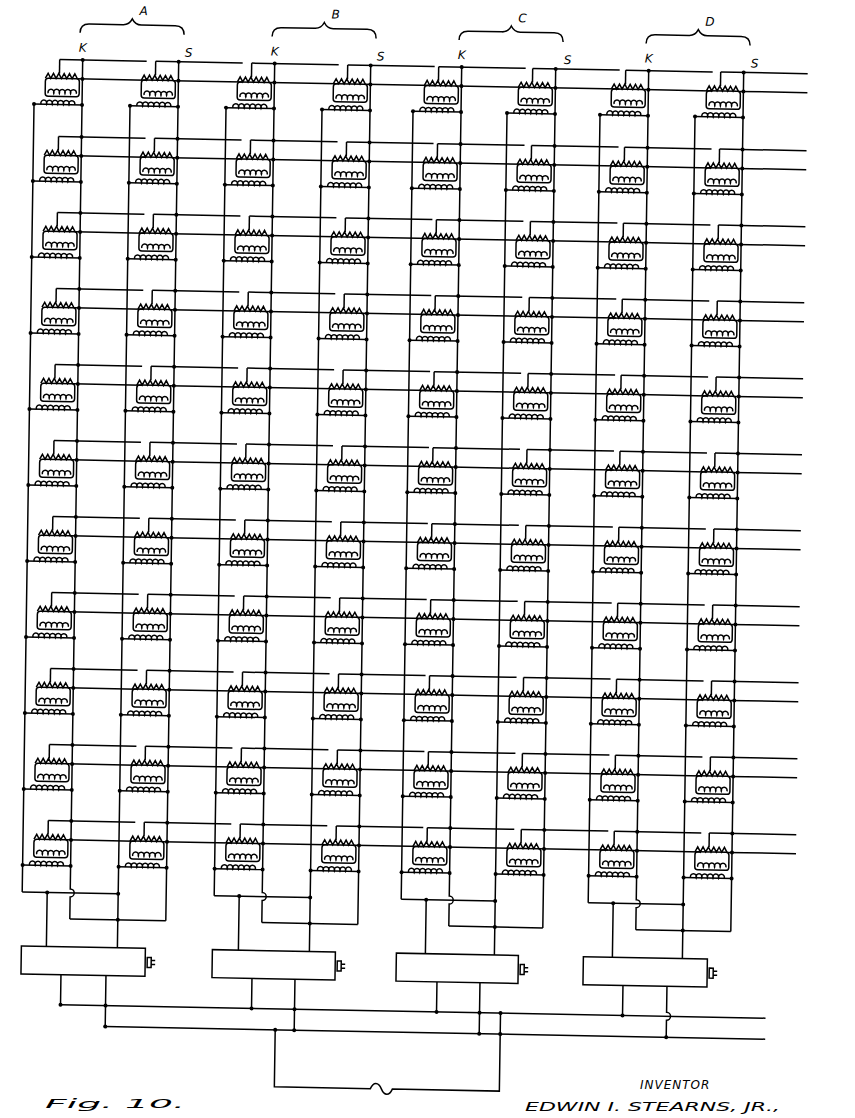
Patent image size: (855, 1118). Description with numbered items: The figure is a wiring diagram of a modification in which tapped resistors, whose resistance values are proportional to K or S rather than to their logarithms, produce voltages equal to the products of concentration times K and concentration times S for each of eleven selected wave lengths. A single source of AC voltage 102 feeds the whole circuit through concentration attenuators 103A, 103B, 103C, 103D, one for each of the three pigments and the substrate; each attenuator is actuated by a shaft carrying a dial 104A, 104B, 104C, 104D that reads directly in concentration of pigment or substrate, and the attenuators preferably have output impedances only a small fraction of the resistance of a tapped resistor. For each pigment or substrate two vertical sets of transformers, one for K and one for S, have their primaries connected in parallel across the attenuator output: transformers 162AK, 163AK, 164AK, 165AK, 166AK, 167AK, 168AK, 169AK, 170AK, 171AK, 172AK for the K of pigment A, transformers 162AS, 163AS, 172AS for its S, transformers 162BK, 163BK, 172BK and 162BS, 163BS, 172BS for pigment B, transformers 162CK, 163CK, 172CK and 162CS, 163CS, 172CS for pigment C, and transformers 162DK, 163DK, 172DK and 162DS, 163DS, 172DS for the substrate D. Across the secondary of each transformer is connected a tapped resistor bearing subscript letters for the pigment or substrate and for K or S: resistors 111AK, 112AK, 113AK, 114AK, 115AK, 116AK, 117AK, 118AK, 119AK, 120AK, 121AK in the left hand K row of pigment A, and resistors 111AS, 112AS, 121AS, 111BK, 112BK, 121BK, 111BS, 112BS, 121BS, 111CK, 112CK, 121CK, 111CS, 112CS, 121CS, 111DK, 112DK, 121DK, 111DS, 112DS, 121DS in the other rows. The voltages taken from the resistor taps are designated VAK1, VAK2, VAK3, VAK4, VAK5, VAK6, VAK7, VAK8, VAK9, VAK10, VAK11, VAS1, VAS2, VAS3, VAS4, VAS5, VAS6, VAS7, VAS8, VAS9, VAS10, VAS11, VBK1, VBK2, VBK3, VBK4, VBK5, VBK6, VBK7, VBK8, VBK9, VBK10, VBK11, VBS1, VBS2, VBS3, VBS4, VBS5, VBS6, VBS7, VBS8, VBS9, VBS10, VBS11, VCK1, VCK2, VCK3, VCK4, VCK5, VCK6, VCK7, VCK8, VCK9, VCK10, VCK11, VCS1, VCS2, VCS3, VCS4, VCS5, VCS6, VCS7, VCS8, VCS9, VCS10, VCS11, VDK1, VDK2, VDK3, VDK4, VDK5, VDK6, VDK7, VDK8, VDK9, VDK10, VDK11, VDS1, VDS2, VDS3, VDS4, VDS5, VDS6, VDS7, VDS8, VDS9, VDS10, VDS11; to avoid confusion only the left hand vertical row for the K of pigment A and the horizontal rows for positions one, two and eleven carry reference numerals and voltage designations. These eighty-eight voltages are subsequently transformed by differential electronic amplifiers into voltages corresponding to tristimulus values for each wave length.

The tapped resistor 111AK is at (12, 46).
The tapped resistor 112AK is at (60, 148).
The tapped resistor 113AK is at (59, 224).
The tapped resistor 114AK is at (58, 300).
The tapped resistor 115AK is at (57, 376).
The tapped resistor 116AK is at (55, 452).
The tapped resistor 117AK is at (54, 528).
The tapped resistor 118AK is at (53, 604).
The tapped resistor 119AK is at (52, 680).
The tapped resistor 120AK is at (51, 756).
The tapped resistor 121AK is at (50, 832).
The tapped resistor 111AS is at (143, 67).
The tapped resistor 112AS is at (156, 150).
The tapped resistor 121AS is at (146, 834).
The tapped resistor 111BK is at (247, 70).
The tapped resistor 112BK is at (252, 152).
The tapped resistor 121BK is at (242, 836).
The tapped resistor 111BS is at (342, 71).
The tapped resistor 112BS is at (348, 154).
The tapped resistor 121BS is at (338, 838).
The tapped resistor 111CK is at (435, 73).
The tapped resistor 112CK is at (439, 155).
The tapped resistor 121CK is at (429, 839).
The tapped resistor 111CS is at (527, 75).
The tapped resistor 112CS is at (533, 157).
The tapped resistor 121CS is at (523, 841).
The tapped resistor 111DK is at (622, 77).
The tapped resistor 112DK is at (627, 159).
The tapped resistor 121DK is at (617, 843).
The tapped resistor 111DS is at (714, 78).
The tapped resistor 112DS is at (721, 161).
The tapped resistor 121DS is at (711, 845).
The transformer 162AK is at (41, 73).
The transformer 163AK is at (78, 189).
The transformer 164AK is at (76, 265).
The transformer 165AK is at (75, 341).
The transformer 166AK is at (74, 417).
The transformer 167AK is at (73, 493).
The transformer 168AK is at (72, 569).
The transformer 169AK is at (71, 645).
The transformer 170AK is at (70, 721).
The transformer 171AK is at (68, 797).
The transformer 172AK is at (67, 873).
The transformer 162AS is at (173, 102).
The transformer 163AS is at (173, 191).
The transformer 172AS is at (162, 875).
The transformer 162BK is at (270, 104).
The transformer 163BK is at (270, 193).
The transformer 172BK is at (259, 877).
The transformer 162BS is at (365, 105).
The transformer 163BS is at (365, 194).
The transformer 172BS is at (354, 878).
The transformer 162CK is at (457, 107).
The transformer 163CK is at (457, 196).
The transformer 172CK is at (446, 880).
The transformer 162CS is at (551, 109).
The transformer 163CS is at (551, 198).
The transformer 172CS is at (540, 882).
The transformer 162DK is at (644, 111).
The transformer 163DK is at (644, 200).
The transformer 172DK is at (633, 884).
The transformer 162DS is at (739, 113).
The transformer 163DS is at (739, 201).
The transformer 172DS is at (728, 885).
The voltage VAK1 is at (102, 69).
The voltage VAK2 is at (101, 146).
The voltage VAK3 is at (100, 222).
The voltage VAK4 is at (99, 298).
The voltage VAK5 is at (98, 374).
The voltage VAK6 is at (97, 450).
The voltage VAK7 is at (96, 526).
The voltage VAK8 is at (94, 602).
The voltage VAK9 is at (93, 678).
The voltage VAK10 is at (92, 754).
The voltage VAK11 is at (91, 830).
The voltage VAS1 is at (198, 71).
The voltage VAS2 is at (197, 148).
The voltage VAS3 is at (196, 224).
The voltage VAS4 is at (195, 300).
The voltage VAS5 is at (194, 376).
The voltage VAS6 is at (193, 452).
The voltage VAS7 is at (192, 528).
The voltage VAS8 is at (190, 604).
The voltage VAS9 is at (189, 680).
The voltage VAS10 is at (188, 756).
The voltage VAS11 is at (187, 832).
The voltage VBK1 is at (294, 73).
The voltage VBK2 is at (293, 150).
The voltage VBK3 is at (292, 226).
The voltage VBK4 is at (291, 302).
The voltage VBK5 is at (290, 378).
The voltage VBK6 is at (289, 454).
The voltage VBK7 is at (288, 530).
The voltage VBK8 is at (286, 606).
The voltage VBK9 is at (285, 682).
The voltage VBK10 is at (284, 758).
The voltage VBK11 is at (283, 834).
The voltage VBS1 is at (390, 75).
The voltage VBS2 is at (389, 152).
The voltage VBS3 is at (388, 228).
The voltage VBS4 is at (387, 304).
The voltage VBS5 is at (386, 380).
The voltage VBS6 is at (385, 456).
The voltage VBS7 is at (384, 532).
The voltage VBS8 is at (382, 608).
The voltage VBS9 is at (381, 684).
The voltage VBS10 is at (380, 760).
The voltage VBS11 is at (379, 836).
The voltage VCK1 is at (481, 77).
The voltage VCK2 is at (480, 154).
The voltage VCK3 is at (479, 230).
The voltage VCK4 is at (478, 306).
The voltage VCK5 is at (477, 382).
The voltage VCK6 is at (476, 458).
The voltage VCK7 is at (475, 534).
The voltage VCK8 is at (473, 610).
The voltage VCK9 is at (472, 686).
The voltage VCK10 is at (471, 762).
The voltage VCK11 is at (470, 838).
The voltage VCS1 is at (575, 78).
The voltage VCS2 is at (574, 155).
The voltage VCS3 is at (573, 231).
The voltage VCS4 is at (572, 307).
The voltage VCS5 is at (571, 383).
The voltage VCS6 is at (570, 459).
The voltage VCS7 is at (569, 535).
The voltage VCS8 is at (567, 611).
The voltage VCS9 is at (566, 687).
The voltage VCS10 is at (565, 763).
The voltage VCS11 is at (564, 839).
The voltage VDK1 is at (668, 80).
The voltage VDK2 is at (667, 157).
The voltage VDK3 is at (666, 233).
The voltage VDK4 is at (665, 309).
The voltage VDK5 is at (664, 385).
The voltage VDK6 is at (663, 461).
The voltage VDK7 is at (662, 537).
The voltage VDK8 is at (660, 613).
The voltage VDK9 is at (659, 689).
The voltage VDK10 is at (658, 765).
The voltage VDK11 is at (657, 841).
The voltage VDS1 is at (763, 82).
The voltage VDS2 is at (762, 159).
The voltage VDS3 is at (761, 235).
The voltage VDS4 is at (760, 311).
The voltage VDS5 is at (759, 387).
The voltage VDS6 is at (758, 463).
The voltage VDS7 is at (757, 539).
The voltage VDS8 is at (755, 615).
The voltage VDS9 is at (754, 691).
The voltage VDS10 is at (753, 767).
The voltage VDS11 is at (752, 843).
The concentration attenuator 103A is at (134, 974).
The concentration attenuator 103B is at (311, 974).
The concentration attenuator 103C is at (503, 974).
The concentration attenuator 103D is at (684, 974).
The dial 104A is at (168, 958).
The dial 104B is at (358, 957).
The dial 104C is at (539, 956).
The dial 104D is at (732, 960).
The source of AC voltage 102 is at (396, 1084).